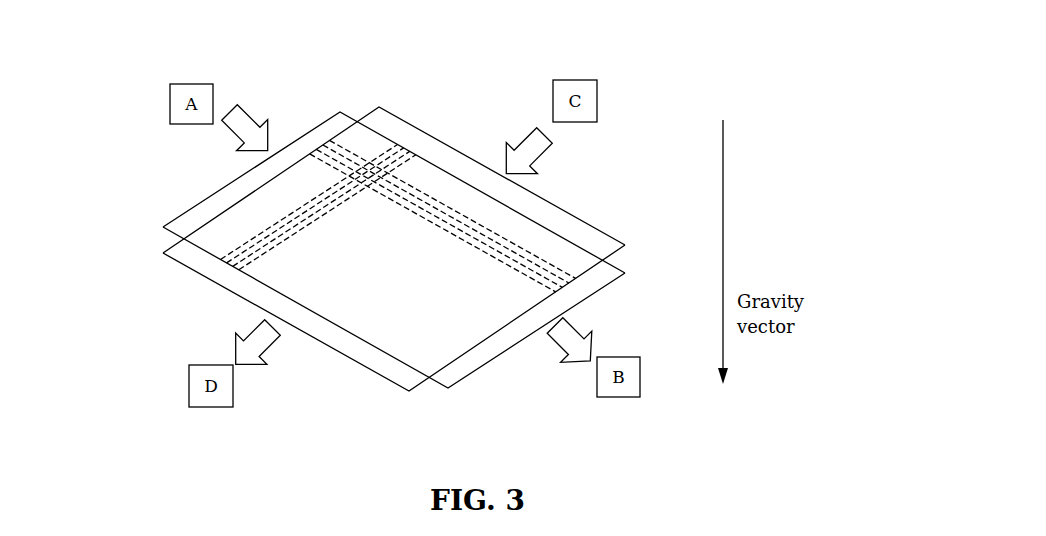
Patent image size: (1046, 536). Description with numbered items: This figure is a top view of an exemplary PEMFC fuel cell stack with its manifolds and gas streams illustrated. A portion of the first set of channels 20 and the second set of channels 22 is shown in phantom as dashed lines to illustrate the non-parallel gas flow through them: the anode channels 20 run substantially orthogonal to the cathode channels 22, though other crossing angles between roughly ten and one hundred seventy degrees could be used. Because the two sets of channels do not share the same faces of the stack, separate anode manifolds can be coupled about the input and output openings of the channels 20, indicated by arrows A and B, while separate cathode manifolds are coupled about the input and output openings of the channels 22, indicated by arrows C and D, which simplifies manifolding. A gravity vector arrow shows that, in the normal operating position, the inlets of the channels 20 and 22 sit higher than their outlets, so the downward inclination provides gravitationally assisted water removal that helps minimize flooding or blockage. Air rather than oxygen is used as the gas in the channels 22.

The first set of channels 20 is at (513, 252).
The second set of channels 22 is at (243, 233).